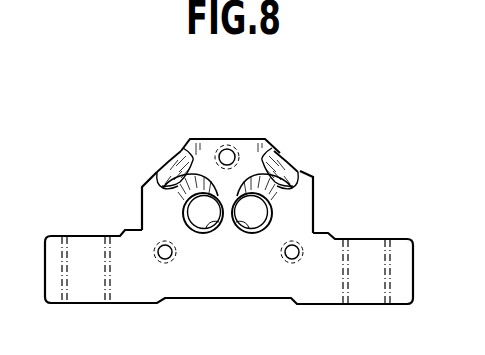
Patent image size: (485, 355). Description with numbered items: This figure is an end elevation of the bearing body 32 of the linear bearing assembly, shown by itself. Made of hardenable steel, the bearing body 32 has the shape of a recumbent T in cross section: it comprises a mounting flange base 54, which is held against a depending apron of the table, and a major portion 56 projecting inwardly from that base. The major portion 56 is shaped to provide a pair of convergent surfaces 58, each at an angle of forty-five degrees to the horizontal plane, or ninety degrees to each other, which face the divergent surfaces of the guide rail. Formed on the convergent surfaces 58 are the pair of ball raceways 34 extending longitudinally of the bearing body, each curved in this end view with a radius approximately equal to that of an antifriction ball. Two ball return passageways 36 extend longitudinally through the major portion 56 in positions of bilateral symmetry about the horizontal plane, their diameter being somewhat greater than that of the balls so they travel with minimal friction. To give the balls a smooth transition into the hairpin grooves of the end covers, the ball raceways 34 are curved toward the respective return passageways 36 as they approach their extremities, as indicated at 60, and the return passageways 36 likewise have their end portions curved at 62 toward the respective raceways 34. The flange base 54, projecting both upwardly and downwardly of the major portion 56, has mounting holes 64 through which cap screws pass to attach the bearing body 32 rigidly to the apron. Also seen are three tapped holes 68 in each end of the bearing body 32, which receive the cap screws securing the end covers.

The bearing body 32 is at (335, 155).
The ball raceways 34 is at (176, 168).
The ball return passageways 36 is at (216, 228).
The mounting flange base 54 is at (327, 294).
The major portion 56 is at (255, 139).
The convergent surfaces 58 is at (146, 183).
The curved raceway ends 60 is at (176, 164).
The curved passageway end portions 62 is at (182, 198).
The mounting holes 64 is at (66, 256).
The tapped holes 68 is at (229, 146).